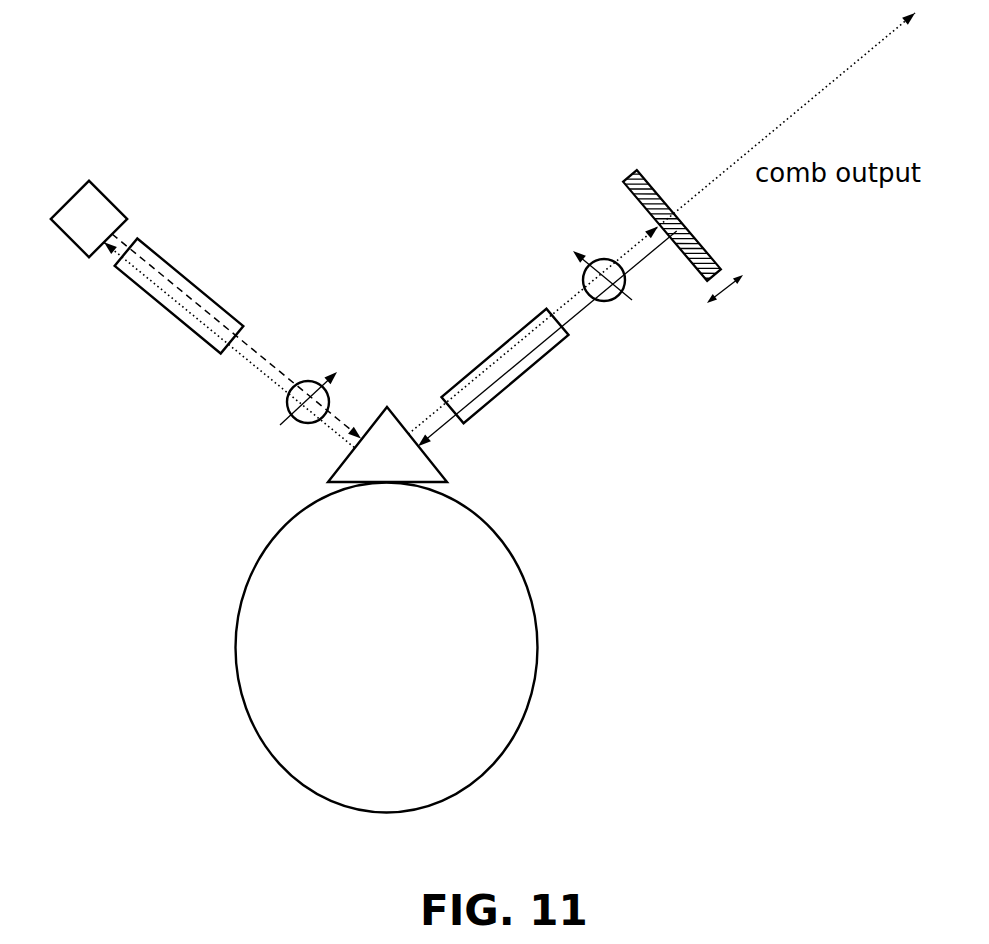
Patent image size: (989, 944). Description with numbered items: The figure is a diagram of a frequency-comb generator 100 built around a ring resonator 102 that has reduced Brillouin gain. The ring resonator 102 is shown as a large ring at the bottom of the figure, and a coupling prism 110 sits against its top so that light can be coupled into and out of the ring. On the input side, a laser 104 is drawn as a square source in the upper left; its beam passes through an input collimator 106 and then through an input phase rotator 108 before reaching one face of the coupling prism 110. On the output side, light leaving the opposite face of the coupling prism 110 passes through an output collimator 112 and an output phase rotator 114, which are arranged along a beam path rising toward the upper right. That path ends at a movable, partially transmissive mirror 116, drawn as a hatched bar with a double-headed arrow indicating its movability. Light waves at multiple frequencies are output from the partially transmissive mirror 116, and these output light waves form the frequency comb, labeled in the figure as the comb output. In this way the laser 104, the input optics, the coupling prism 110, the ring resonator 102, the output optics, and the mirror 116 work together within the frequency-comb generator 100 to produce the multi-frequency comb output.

The frequency-comb generator 100 is at (163, 604).
The ring resonator 102 is at (538, 613).
The laser 104 is at (108, 198).
The input collimator 106 is at (150, 292).
The input phase rotator 108 is at (309, 424).
The coupling prism 110 is at (403, 466).
The output collimator 112 is at (490, 356).
The output phase rotator 114 is at (604, 302).
The movable, partially transmissive mirror 116 is at (670, 209).